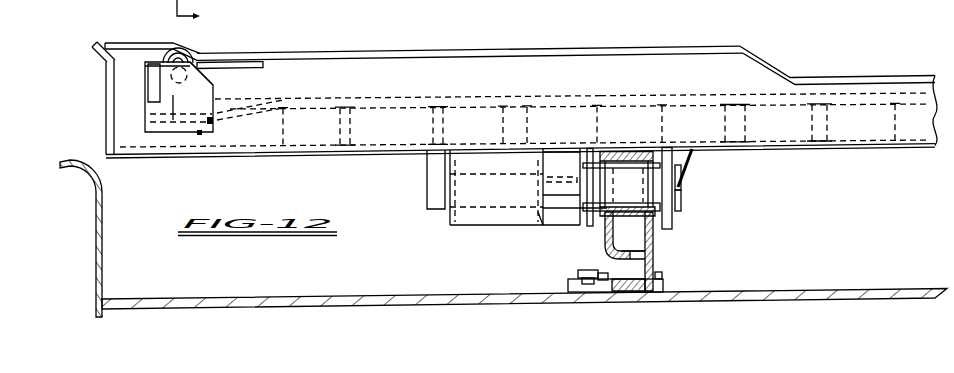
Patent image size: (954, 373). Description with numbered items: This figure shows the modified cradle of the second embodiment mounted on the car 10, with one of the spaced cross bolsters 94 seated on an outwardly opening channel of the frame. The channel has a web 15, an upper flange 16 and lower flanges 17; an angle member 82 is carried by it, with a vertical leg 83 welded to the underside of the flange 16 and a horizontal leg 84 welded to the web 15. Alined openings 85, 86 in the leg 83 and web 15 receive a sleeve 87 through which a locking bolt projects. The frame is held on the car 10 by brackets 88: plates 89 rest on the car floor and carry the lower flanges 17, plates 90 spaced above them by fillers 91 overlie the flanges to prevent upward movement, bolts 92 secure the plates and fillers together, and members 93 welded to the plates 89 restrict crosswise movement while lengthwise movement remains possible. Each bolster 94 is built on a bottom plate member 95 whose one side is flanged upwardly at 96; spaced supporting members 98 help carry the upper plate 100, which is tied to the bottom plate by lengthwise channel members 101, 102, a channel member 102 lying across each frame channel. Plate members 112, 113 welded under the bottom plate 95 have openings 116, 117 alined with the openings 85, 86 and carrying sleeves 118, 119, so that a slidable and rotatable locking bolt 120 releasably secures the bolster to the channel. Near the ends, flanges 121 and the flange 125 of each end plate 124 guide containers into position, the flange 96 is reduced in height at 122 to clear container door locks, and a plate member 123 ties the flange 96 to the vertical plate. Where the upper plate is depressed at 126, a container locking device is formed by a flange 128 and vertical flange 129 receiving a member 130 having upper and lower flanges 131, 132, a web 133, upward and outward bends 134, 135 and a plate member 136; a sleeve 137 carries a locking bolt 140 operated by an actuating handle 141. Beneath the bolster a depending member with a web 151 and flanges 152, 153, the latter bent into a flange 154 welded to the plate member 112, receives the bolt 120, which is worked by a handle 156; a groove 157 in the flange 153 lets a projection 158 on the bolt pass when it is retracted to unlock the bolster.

The car 10 is at (101, 212).
The web 15 is at (651, 250).
The flange 16 is at (629, 150).
The lower flanges 17 is at (633, 281).
The angle member 82 is at (610, 237).
The vertical leg 83 is at (610, 222).
The horizontal leg 84 is at (633, 243).
The opening 85 is at (601, 220).
The opening 86 is at (653, 218).
The sleeve 87 is at (621, 152).
The brackets 88 is at (573, 286).
The plates 89 is at (627, 289).
The plates 90 is at (606, 276).
The fillers 91 is at (578, 274).
The bolts 92 is at (588, 278).
The members 93 is at (663, 278).
The cross bolsters 94 is at (848, 150).
The bottom plate member 95 is at (785, 143).
The flange 96 is at (449, 67).
The supporting members 98 is at (305, 113).
The upper plate 100 is at (546, 100).
The channel member 101 is at (386, 107).
The channel member 102 is at (622, 102).
The plate member 112 is at (584, 219).
The plate member 113 is at (675, 217).
The opening 116 is at (587, 156).
The opening 117 is at (680, 147).
The sleeve 118 is at (583, 208).
The sleeve 119 is at (681, 203).
The locking bolt 120 is at (682, 177).
The flanges 121 is at (127, 50).
The reduced height portion 122 is at (851, 76).
The plate member 123 is at (541, 55).
The end plates 124 is at (107, 110).
The flange 125 is at (96, 54).
The depressed portion 126 is at (250, 100).
The flange 128 is at (201, 129).
The vertical flange 129 is at (216, 121).
The member 130 is at (150, 113).
The upper flange 131 is at (166, 55).
The lower flange 132 is at (181, 78).
The vertical web 133 is at (147, 88).
The upward flange 134 is at (192, 87).
The outward flange 135 is at (215, 90).
The plate member 136 is at (141, 122).
The sleeve 137 is at (193, 55).
The locking bolt 140 is at (201, 77).
The actuating handle 141 is at (265, 61).
The web 151 is at (478, 213).
The flange 152 is at (450, 219).
The flange 153 is at (540, 224).
The flange 154 is at (551, 160).
The handle 156 is at (428, 174).
The groove 157 is at (541, 163).
The projection 158 is at (558, 181).